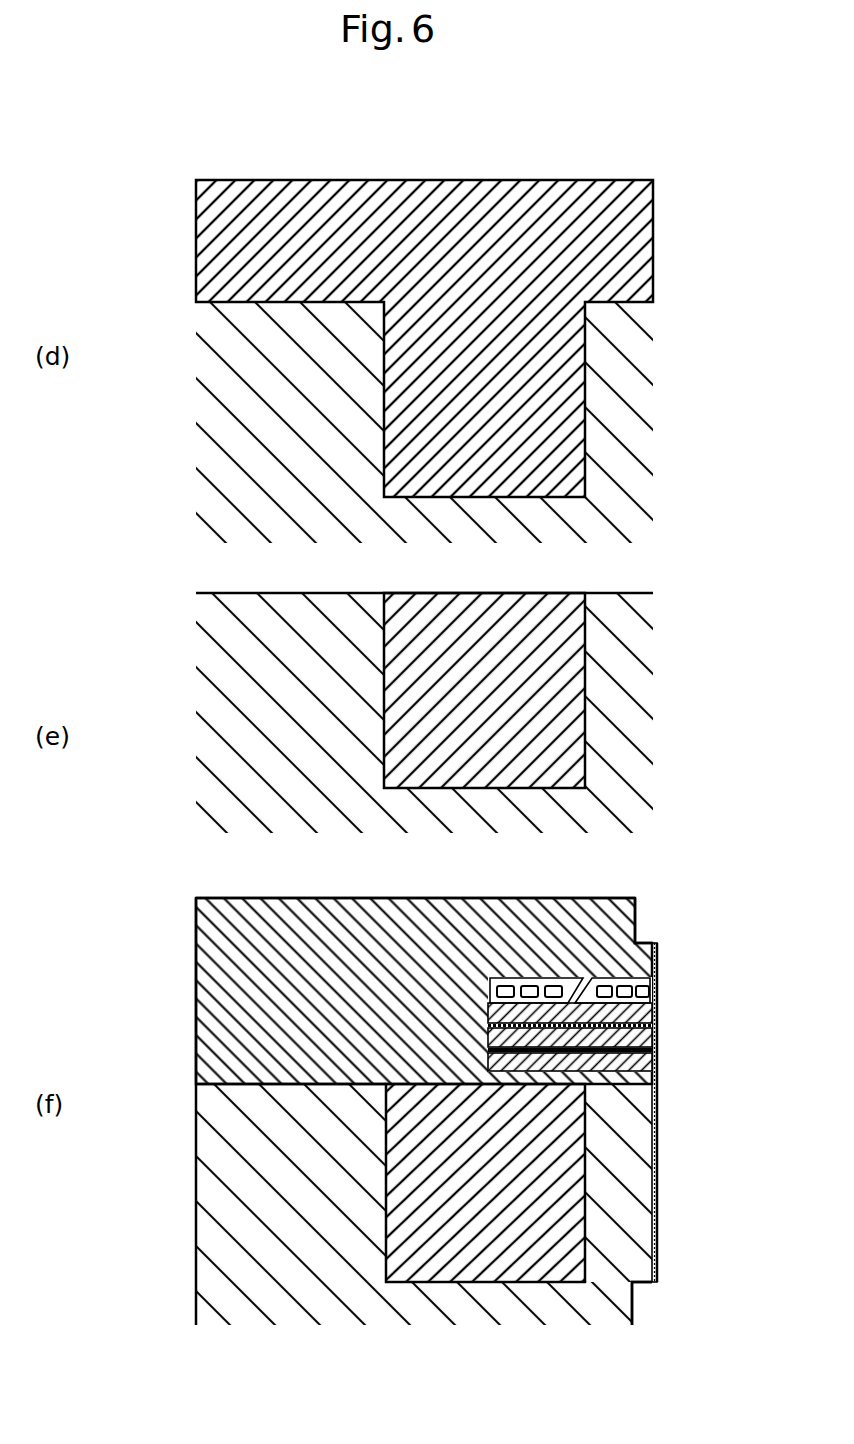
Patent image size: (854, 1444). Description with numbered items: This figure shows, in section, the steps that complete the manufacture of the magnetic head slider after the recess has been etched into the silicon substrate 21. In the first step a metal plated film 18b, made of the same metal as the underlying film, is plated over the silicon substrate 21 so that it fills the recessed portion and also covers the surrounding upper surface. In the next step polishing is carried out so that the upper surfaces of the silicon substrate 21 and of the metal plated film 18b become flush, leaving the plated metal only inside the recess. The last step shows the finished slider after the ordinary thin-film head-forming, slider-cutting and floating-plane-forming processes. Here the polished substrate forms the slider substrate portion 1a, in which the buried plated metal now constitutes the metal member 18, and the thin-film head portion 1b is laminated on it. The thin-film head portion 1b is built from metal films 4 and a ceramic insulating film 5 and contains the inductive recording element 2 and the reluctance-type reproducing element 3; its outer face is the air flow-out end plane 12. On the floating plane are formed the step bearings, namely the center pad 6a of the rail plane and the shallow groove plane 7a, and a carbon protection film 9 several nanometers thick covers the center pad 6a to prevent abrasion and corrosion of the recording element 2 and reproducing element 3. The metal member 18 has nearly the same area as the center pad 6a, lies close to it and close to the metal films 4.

The silicon substrate 21 is at (212, 495).
The metal plated film 18b is at (532, 397).
The thin-film head portion 1b is at (348, 1013).
The slider substrate portion 1a is at (343, 1278).
The air flow-out end plane 12 is at (298, 897).
The ceramic insulating film 5 is at (257, 958).
The metal films 4 is at (550, 1055).
The inductive recording element 2 is at (652, 998).
The reluctance-type reproducing element 3 is at (650, 1048).
The shallow groove plane 7a is at (636, 918).
The carbon protection film 9 is at (657, 1177).
The center pad 6a is at (657, 1242).
The metal member 18 is at (496, 1253).